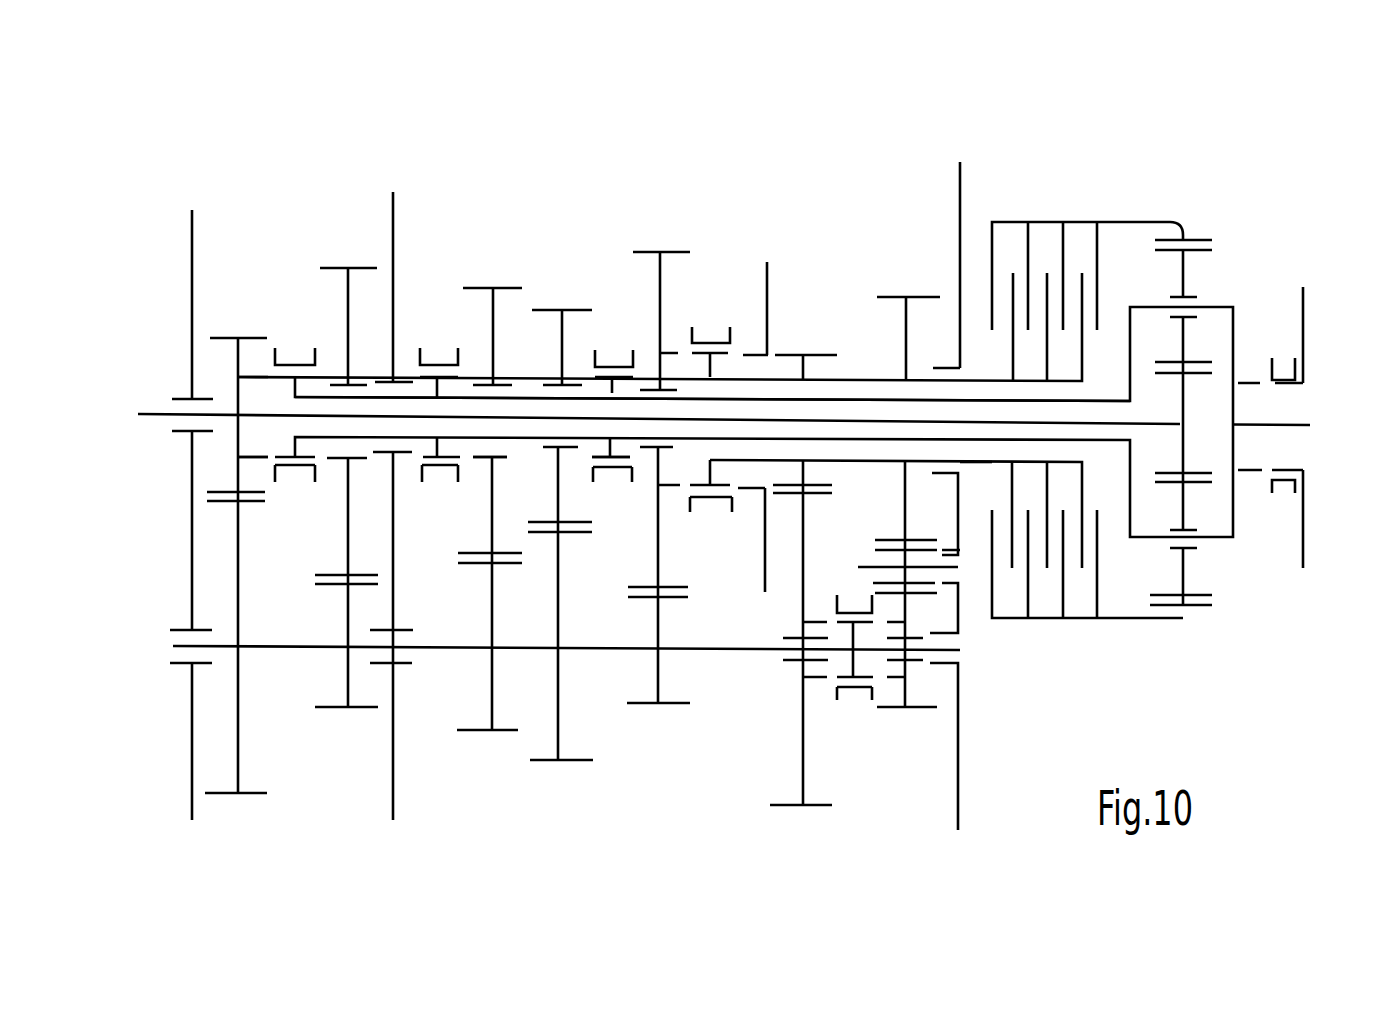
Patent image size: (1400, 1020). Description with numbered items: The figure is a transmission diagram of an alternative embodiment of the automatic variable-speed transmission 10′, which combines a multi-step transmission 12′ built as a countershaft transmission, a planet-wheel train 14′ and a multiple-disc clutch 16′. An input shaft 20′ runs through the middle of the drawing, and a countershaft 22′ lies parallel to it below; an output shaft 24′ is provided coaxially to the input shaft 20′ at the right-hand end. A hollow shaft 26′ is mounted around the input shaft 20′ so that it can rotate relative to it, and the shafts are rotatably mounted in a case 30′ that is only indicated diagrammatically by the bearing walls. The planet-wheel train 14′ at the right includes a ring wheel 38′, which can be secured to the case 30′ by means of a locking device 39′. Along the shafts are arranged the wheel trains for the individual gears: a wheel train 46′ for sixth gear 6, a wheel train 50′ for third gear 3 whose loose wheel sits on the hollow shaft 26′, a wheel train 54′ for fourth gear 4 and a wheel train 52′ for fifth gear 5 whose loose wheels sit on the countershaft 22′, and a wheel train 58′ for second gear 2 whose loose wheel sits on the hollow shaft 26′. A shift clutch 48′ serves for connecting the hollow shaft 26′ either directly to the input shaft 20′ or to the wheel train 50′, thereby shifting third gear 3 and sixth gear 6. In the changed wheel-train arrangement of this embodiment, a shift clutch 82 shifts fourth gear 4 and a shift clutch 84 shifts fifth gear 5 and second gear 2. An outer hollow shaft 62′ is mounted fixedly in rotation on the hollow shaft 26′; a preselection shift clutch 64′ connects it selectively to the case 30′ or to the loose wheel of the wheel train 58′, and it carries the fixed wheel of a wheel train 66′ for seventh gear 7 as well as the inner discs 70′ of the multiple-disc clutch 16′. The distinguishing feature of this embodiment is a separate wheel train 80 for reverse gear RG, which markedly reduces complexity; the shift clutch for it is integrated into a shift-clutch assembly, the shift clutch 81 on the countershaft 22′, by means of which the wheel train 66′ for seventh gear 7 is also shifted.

The automatic variable-speed transmission 10′ is at (1242, 152).
The multi-step transmission 12′ is at (567, 151).
The planet-wheel train 14′ is at (1181, 176).
The multiple-disc clutch 16′ is at (1060, 176).
The input shaft 20′ is at (158, 413).
The countershaft 22′ is at (273, 648).
The output shaft 24′ is at (1287, 427).
The hollow shaft 26′ is at (527, 437).
The case 30′ is at (393, 222).
The ring wheel 38′ is at (1183, 240).
The locking device 39′ is at (1287, 358).
The wheel train for sixth gear 46′ is at (258, 333).
The shift clutch 48′ is at (297, 483).
The wheel train for third gear 50′ is at (333, 266).
The wheel train for fifth gear 52′ is at (578, 306).
The wheel train for fourth gear 54′ is at (483, 284).
The wheel train for second gear 58′ is at (687, 240).
The outer hollow shaft 62′ is at (972, 465).
The preselection shift clutch 64′ is at (707, 512).
The wheel train for seventh gear 66′ is at (797, 812).
The inner discs 70′ is at (1013, 370).
The wheel train for reverse gear 80 is at (899, 288).
The shift clutch 81 is at (850, 700).
The shift clutch 82 is at (440, 478).
The shift clutch 84 is at (615, 352).
The second gear 2 is at (658, 456).
The third gear 3 is at (346, 458).
The fourth gear 4 is at (489, 470).
The fifth gear 5 is at (560, 485).
The sixth gear 6 is at (205, 515).
The seventh gear 7 is at (806, 294).
The reverse gear RG is at (908, 297).